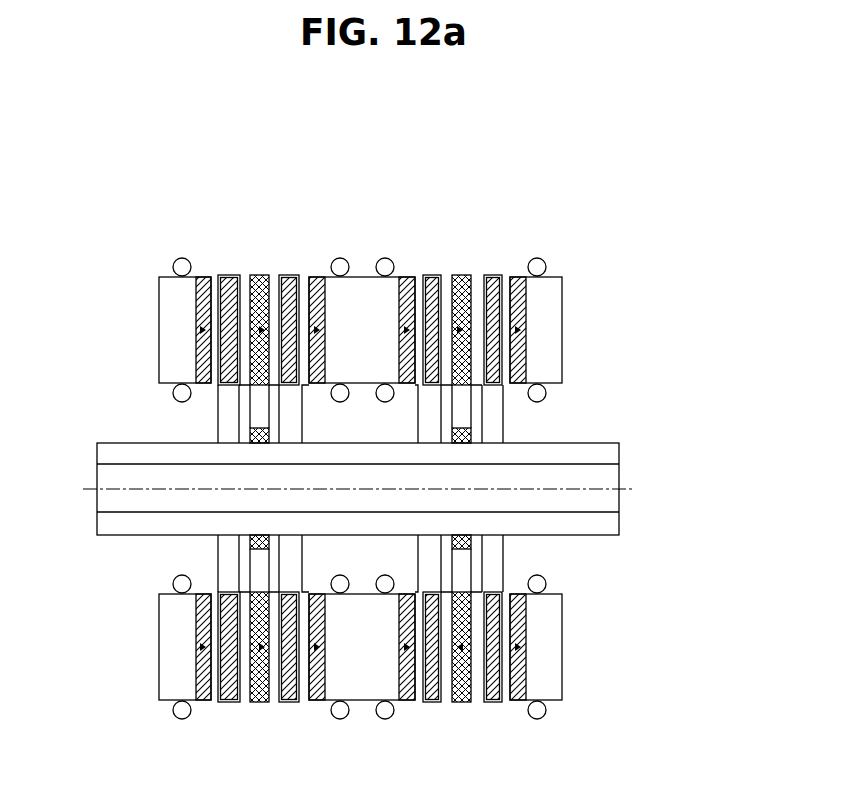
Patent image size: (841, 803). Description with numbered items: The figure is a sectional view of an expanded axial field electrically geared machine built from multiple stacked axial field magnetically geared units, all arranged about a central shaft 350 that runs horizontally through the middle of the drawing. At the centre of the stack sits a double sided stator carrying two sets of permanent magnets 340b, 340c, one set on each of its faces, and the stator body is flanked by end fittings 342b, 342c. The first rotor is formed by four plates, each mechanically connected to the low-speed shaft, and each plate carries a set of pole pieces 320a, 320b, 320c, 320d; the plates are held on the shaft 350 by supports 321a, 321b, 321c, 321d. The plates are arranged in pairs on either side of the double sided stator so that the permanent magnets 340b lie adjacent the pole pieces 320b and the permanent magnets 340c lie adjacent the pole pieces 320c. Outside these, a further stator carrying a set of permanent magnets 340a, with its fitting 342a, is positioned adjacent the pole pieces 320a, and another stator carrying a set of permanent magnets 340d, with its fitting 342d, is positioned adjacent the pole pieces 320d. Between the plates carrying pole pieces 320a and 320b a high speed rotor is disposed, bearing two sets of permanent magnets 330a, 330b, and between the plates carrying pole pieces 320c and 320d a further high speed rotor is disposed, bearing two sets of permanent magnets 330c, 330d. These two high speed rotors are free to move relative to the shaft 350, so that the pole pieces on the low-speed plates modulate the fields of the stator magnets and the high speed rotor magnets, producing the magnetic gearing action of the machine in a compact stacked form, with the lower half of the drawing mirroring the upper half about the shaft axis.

The shaft 350 is at (602, 455).
The support member 321a is at (495, 400).
The support member 321b is at (435, 425).
The support member 321c is at (287, 412).
The support member 321d is at (220, 428).
The pole pieces 320a is at (500, 280).
The pole pieces 320b is at (432, 287).
The pole pieces 320c is at (290, 280).
The pole pieces 320d is at (226, 282).
The permanent magnets 330a is at (507, 401).
The permanent magnets 330b is at (461, 287).
The permanent magnets 330c is at (225, 419).
The permanent magnets 330d is at (256, 282).
The permanent magnets 340a is at (527, 303).
The permanent magnets 340b is at (404, 287).
The permanent magnets 340c is at (320, 282).
The permanent magnets 340d is at (202, 290).
The coil bobbin flange 342a is at (546, 262).
The coil bobbin flange 342b is at (386, 258).
The coil bobbin flange 342c is at (340, 258).
The coil bobbin flange 342d is at (175, 263).